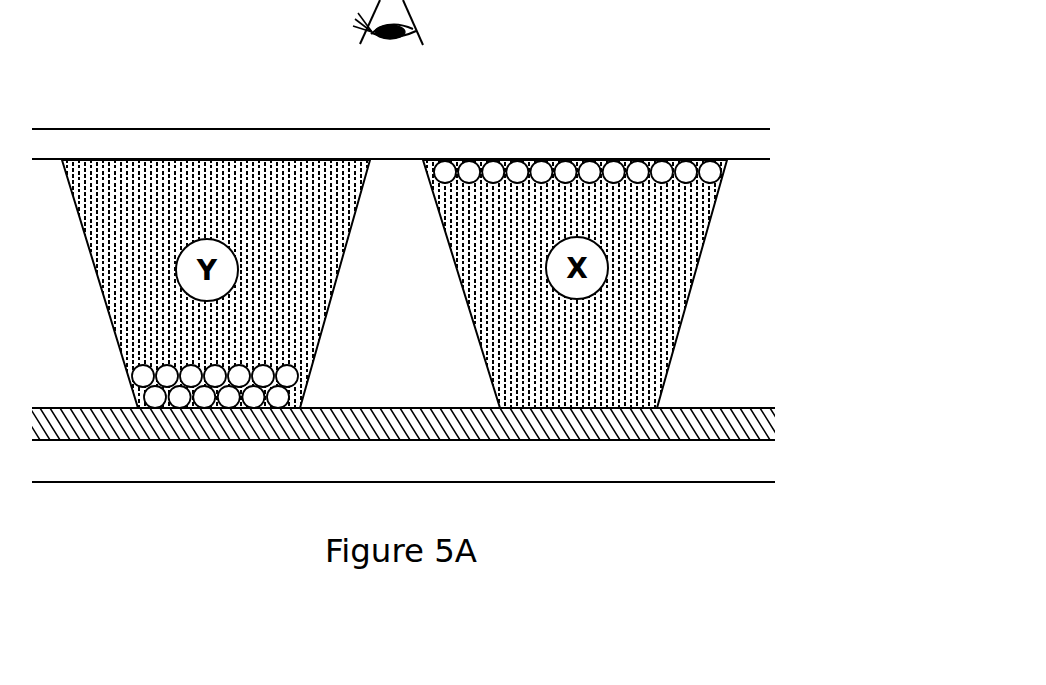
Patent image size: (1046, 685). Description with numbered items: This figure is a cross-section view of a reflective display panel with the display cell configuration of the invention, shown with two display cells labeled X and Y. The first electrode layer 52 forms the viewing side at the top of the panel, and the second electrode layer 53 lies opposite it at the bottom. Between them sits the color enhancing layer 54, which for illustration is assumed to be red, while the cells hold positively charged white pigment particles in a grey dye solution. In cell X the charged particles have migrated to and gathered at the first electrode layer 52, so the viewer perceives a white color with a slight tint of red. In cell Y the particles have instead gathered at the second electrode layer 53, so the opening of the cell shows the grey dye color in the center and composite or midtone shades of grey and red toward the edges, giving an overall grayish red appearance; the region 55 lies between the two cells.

The first electrode layer 52 is at (602, 150).
The second electrode layer 53 is at (698, 462).
The color enhancing layer 54 is at (777, 425).
The gap between pixel wells 55 is at (398, 309).